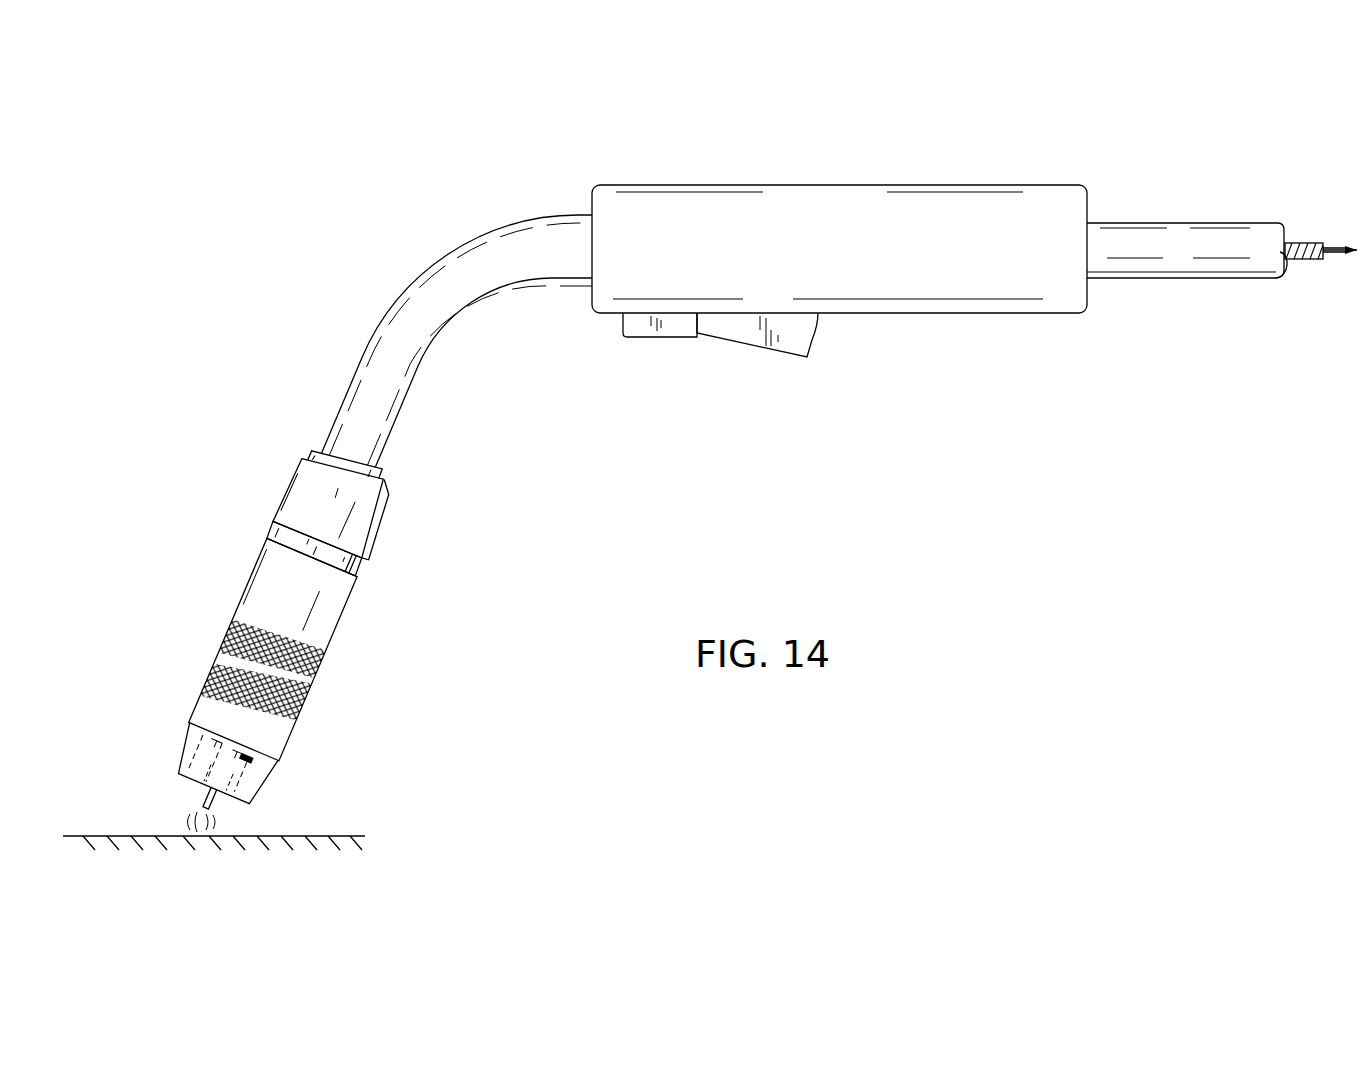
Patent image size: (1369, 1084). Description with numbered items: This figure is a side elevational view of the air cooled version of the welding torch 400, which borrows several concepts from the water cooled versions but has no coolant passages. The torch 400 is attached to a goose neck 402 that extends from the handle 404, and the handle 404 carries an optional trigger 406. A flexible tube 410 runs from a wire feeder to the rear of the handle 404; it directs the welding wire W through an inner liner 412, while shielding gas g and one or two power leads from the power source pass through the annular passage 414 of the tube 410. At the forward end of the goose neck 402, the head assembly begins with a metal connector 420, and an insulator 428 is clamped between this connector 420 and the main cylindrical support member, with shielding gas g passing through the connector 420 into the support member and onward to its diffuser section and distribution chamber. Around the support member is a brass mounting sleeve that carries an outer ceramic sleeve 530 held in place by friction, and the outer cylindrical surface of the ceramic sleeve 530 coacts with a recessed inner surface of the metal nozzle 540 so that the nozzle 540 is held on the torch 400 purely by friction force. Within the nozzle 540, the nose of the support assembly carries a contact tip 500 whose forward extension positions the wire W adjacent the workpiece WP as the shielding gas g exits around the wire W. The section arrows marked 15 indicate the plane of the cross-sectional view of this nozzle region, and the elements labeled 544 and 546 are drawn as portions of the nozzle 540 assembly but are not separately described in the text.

The torch 400 is at (208, 578).
The goose neck 402 is at (437, 275).
The handle 404 is at (866, 203).
The trigger 406 is at (792, 343).
The flexible tube 410 is at (1165, 222).
The liner 412 is at (1310, 263).
The annular passage 414 is at (1287, 272).
The metal connector 420 is at (384, 483).
The insulator 428 is at (369, 520).
The ceramic sleeve 530 is at (282, 540).
The metal nozzle 540 is at (194, 690).
The nozzle front end 544 is at (184, 763).
The nozzle lip 546 is at (356, 587).
The contact tip 500 is at (288, 766).
The wire W is at (1335, 243).
The shielding gas g is at (192, 799).
The workpiece WP is at (334, 836).
The section line of FIG. 15 is at (321, 423).